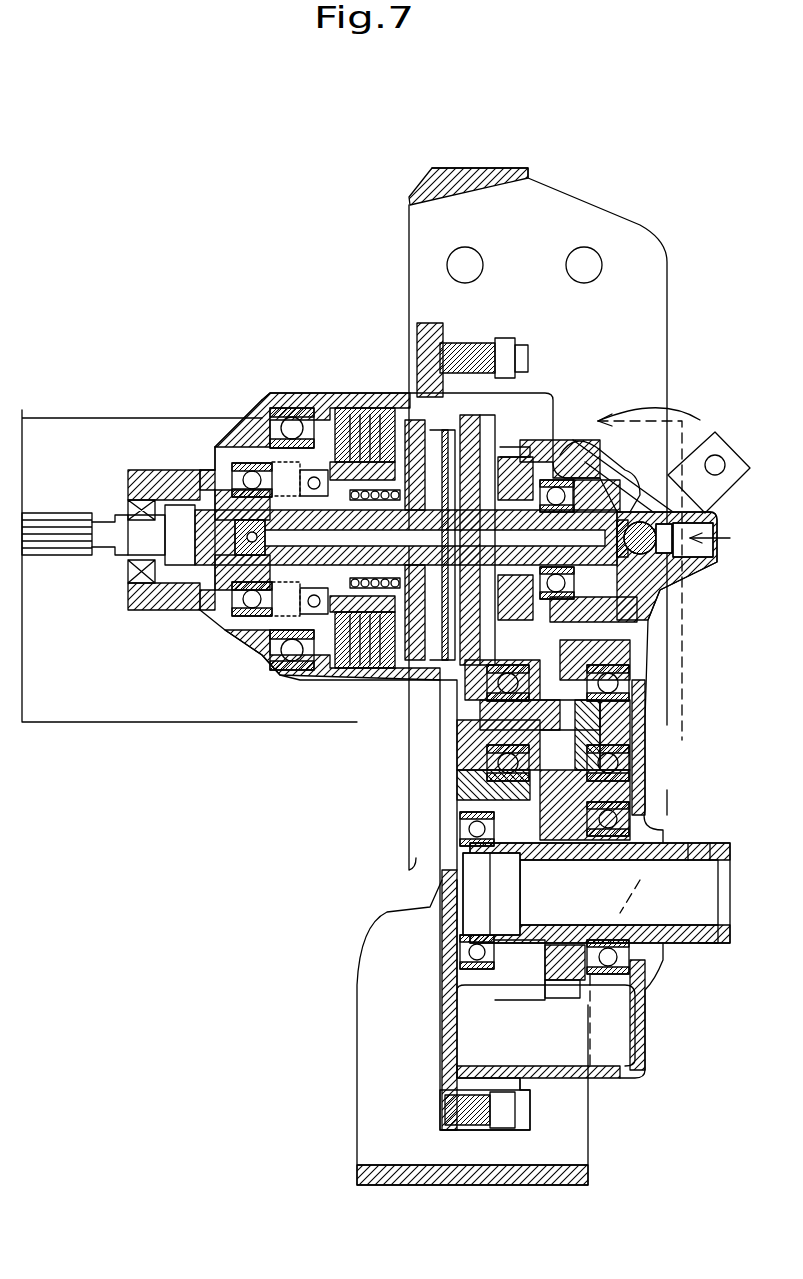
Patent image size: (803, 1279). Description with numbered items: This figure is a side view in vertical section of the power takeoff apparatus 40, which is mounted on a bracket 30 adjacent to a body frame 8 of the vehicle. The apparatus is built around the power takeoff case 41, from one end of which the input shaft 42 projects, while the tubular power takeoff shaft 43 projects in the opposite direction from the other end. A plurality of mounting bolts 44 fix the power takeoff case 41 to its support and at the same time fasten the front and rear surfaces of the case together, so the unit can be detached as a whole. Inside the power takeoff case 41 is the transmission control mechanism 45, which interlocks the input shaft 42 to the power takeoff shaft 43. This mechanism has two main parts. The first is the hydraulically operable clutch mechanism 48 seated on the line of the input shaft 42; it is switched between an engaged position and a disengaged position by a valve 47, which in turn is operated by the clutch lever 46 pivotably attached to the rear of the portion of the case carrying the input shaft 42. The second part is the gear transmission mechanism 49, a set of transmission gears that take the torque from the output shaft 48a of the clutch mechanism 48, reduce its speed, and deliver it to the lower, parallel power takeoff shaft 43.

The body frame 8 is at (145, 706).
The bracket 30 is at (383, 217).
The power takeoff apparatus 40 is at (282, 335).
The power takeoff case 41 is at (290, 682).
The input shaft 42 is at (67, 527).
The power takeoff shaft 43 is at (697, 940).
The mounting bolt 44 is at (523, 360).
The transmission control mechanism 45 is at (291, 898).
The clutch lever 46 is at (713, 432).
The valve 47 is at (660, 530).
The clutch mechanism 48 is at (373, 676).
The output shaft of clutch mechanism 48a is at (505, 460).
The gear transmission mechanism 49 is at (538, 984).